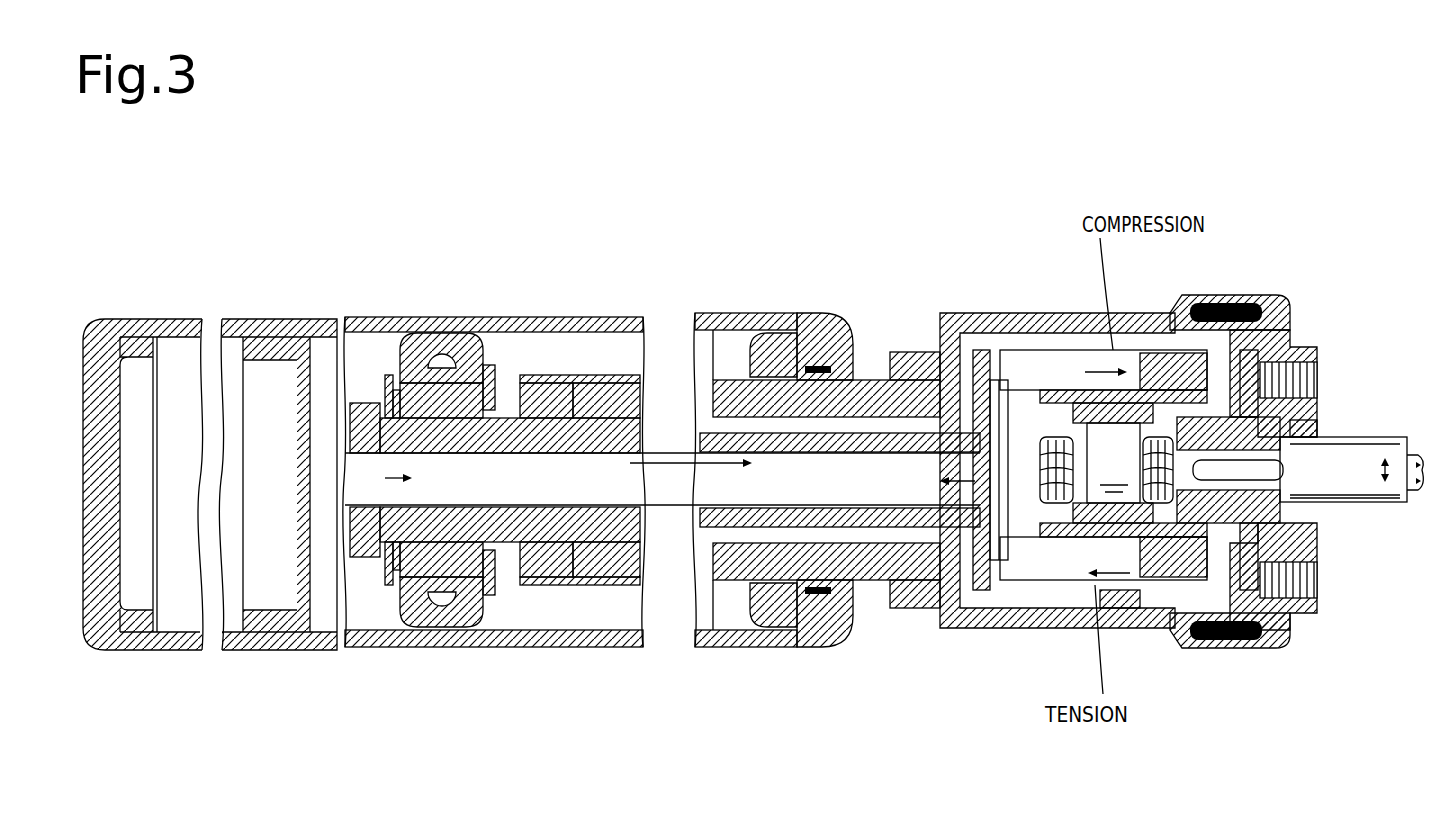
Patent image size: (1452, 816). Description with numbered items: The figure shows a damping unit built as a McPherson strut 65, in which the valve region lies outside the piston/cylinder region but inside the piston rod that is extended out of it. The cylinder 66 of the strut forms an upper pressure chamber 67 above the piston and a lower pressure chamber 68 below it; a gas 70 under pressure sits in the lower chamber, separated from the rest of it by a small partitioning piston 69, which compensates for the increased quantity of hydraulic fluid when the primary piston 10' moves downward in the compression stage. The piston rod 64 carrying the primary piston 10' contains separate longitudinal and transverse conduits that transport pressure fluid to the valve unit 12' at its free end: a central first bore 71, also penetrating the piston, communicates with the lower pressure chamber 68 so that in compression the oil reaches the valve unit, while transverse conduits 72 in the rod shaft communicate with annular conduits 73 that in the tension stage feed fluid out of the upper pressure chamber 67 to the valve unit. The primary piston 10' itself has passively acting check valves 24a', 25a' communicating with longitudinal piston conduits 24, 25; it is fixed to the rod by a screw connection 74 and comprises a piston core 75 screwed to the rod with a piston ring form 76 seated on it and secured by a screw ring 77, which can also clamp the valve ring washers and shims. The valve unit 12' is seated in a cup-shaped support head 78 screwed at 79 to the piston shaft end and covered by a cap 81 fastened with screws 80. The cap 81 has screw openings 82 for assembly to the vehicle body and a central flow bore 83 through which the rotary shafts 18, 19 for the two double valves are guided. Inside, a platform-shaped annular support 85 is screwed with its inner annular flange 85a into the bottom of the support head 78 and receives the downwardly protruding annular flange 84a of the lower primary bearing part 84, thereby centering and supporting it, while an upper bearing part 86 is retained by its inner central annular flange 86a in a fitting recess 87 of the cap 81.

The gas under pressure 70 is at (228, 650).
The partitioning piston 69 is at (250, 337).
The lower pressure chamber 68 is at (320, 650).
The cylinder 66 is at (620, 325).
The upper pressure chamber 67 is at (640, 635).
The primary piston 10' is at (662, 582).
The piston ring form 76 is at (383, 335).
The central first bore 71 is at (335, 335).
The screw ring 77 is at (360, 335).
The longitudinal piston conduit 24 is at (458, 335).
The check valve 24a' is at (469, 318).
The longitudinal piston conduit 25 is at (420, 647).
The check valve 25a' is at (416, 636).
The piston core 75 is at (520, 647).
The screw connection 74 is at (560, 647).
The transverse conduits 72 is at (598, 335).
The McPherson strut 65 is at (768, 308).
The piston rod 64 is at (815, 645).
The annular conduits 73 is at (730, 645).
The screw connection of support head 79 is at (915, 620).
The support head 78 is at (975, 630).
The inner annular flange 85a is at (930, 335).
The annular support 85 is at (975, 335).
The annular flange 84a is at (1008, 335).
The lower primary bearing part 84 is at (1050, 335).
The valve unit 12' is at (1154, 660).
The fitting recess 87 is at (1290, 527).
The screw openings 82 is at (1258, 390).
The upper bearing part 86 is at (1283, 335).
The inner central annular flange 86a is at (1310, 420).
The central flow bore 83 is at (1300, 447).
The rotary shaft 19 is at (1372, 502).
The rotary shaft 18 is at (1405, 492).
The screws 80 is at (1240, 300).
The cap 81 is at (1290, 600).